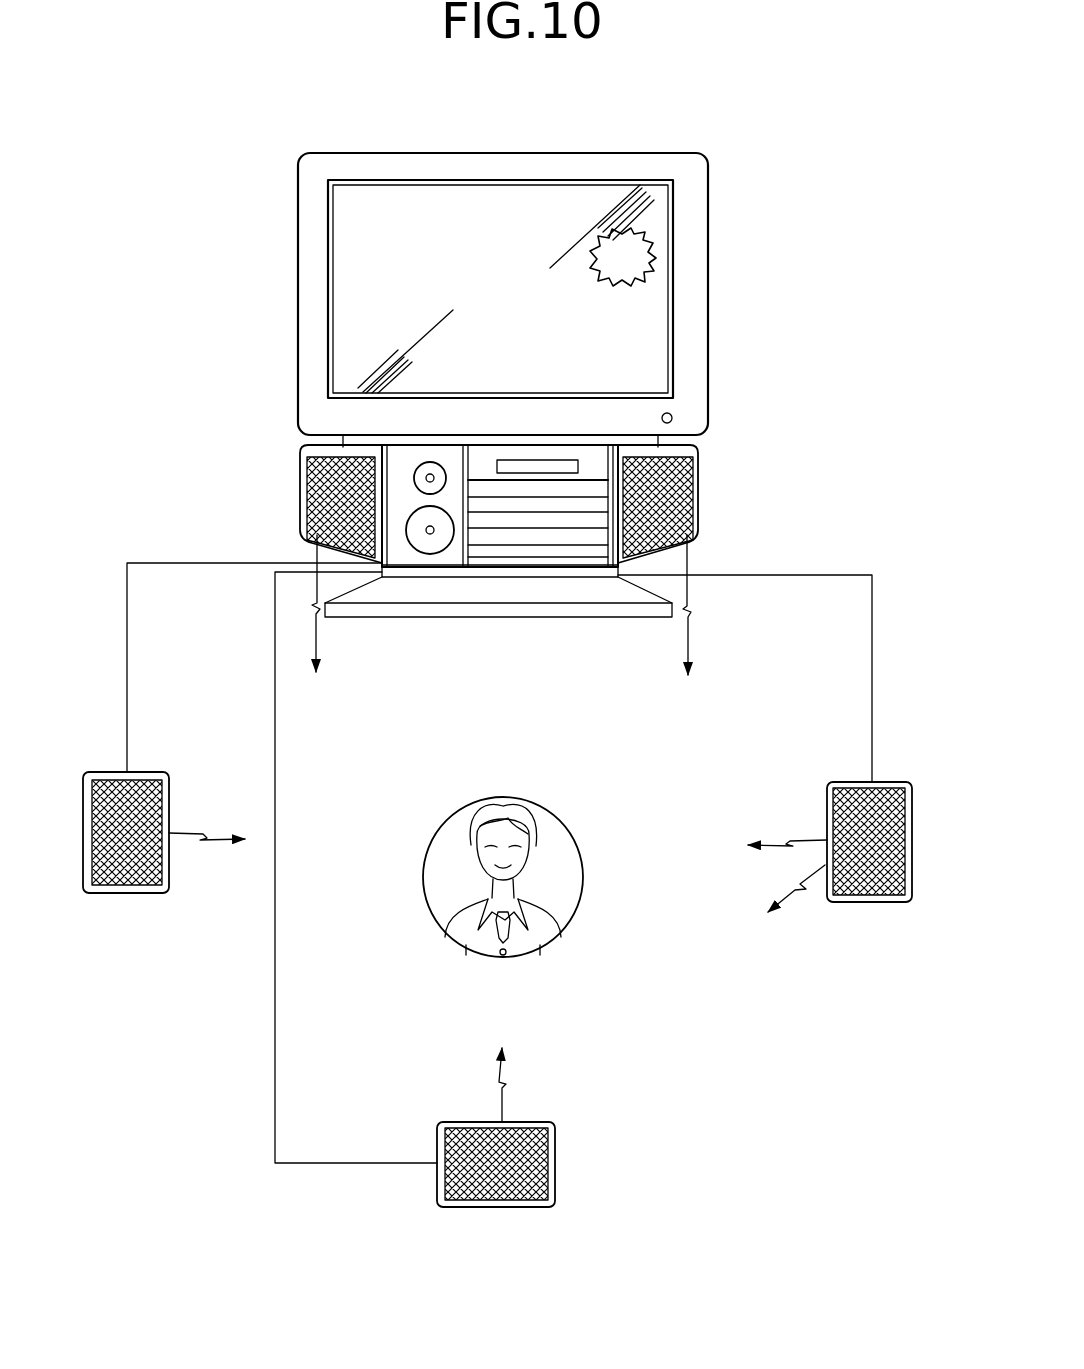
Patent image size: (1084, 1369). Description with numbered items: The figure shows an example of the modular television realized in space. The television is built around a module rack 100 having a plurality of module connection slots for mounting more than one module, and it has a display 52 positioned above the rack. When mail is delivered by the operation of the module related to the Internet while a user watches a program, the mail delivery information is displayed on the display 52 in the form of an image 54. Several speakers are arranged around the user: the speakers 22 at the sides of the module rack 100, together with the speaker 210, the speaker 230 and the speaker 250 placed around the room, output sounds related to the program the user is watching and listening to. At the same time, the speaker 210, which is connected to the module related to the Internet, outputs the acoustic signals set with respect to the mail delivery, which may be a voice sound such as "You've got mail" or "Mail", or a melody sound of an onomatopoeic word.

The module rack 100 is at (493, 446).
The display 52 is at (650, 338).
The image 54 is at (656, 256).
The speakers 22 is at (300, 492).
The speaker 210 is at (873, 902).
The speaker 230 is at (497, 1207).
The speaker 250 is at (129, 893).